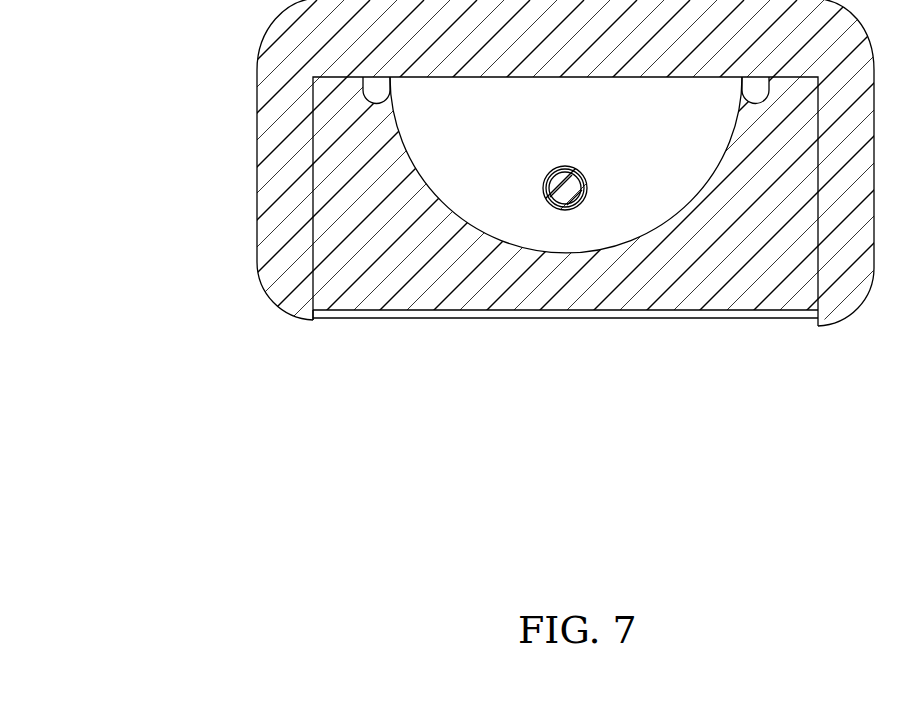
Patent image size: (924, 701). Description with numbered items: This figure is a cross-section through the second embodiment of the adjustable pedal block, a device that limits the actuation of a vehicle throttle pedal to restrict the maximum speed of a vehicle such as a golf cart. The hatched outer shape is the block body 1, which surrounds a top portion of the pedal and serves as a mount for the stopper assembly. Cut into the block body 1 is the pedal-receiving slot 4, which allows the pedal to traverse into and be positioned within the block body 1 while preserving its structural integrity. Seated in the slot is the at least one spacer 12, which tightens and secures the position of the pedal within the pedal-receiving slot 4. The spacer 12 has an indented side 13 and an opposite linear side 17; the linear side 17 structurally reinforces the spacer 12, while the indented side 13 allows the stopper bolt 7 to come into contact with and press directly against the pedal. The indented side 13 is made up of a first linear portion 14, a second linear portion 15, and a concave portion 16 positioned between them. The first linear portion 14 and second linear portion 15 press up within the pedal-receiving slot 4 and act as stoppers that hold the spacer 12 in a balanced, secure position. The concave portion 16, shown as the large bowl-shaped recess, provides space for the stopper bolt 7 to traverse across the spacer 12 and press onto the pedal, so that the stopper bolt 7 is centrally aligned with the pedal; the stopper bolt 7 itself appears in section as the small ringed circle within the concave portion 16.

The block body 1 is at (222, 110).
The pedal-receiving slot 4 is at (372, 328).
The stopper bolt 7 is at (569, 167).
The spacer 12 is at (578, 293).
The indented side 13 is at (333, 67).
The first linear portion 14 is at (758, 101).
The second linear portion 15 is at (376, 101).
The concave portion 16 is at (495, 237).
The linear side 17 is at (300, 322).